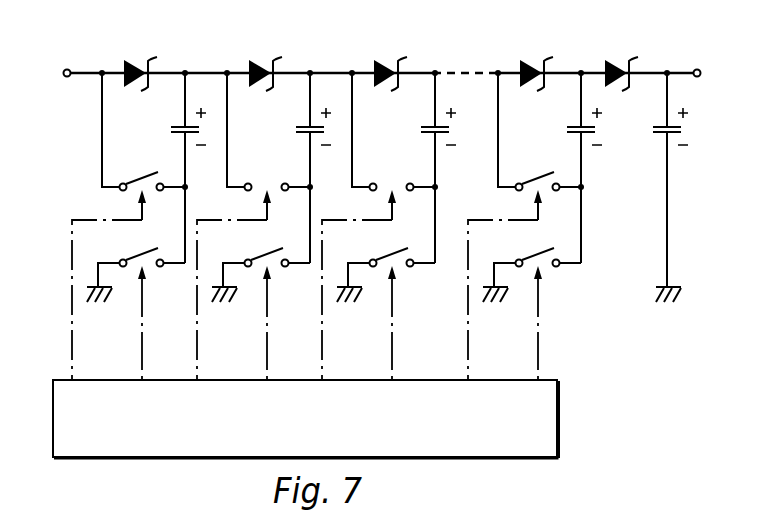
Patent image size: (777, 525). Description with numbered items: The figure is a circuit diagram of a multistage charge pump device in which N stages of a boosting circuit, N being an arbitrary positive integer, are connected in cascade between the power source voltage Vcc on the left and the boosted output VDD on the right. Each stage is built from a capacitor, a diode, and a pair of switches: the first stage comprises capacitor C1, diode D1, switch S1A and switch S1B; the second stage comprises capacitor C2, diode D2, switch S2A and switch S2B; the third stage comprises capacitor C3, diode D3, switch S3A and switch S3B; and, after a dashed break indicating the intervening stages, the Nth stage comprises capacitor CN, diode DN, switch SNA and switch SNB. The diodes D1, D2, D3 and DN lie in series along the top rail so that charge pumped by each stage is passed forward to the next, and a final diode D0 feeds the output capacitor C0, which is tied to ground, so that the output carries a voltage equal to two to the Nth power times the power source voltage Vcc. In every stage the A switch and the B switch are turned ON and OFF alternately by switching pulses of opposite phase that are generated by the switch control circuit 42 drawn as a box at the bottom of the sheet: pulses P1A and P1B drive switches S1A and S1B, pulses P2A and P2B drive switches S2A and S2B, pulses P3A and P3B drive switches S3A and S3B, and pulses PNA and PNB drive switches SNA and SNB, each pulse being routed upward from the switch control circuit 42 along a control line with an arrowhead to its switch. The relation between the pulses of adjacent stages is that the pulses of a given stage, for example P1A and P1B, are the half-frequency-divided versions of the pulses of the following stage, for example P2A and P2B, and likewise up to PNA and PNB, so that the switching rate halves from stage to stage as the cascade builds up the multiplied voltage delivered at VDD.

The switch control circuit 42 is at (539, 439).
The power source voltage Vcc is at (65, 61).
The boosted output voltage terminal VDD is at (720, 74).
The diode D1 is at (135, 59).
The second Schottky diode D2 is at (260, 59).
The third Schottky diode D3 is at (385, 59).
The Nth Schottky diode DN is at (531, 59).
The output Schottky diode D0 is at (615, 59).
The capacitor C1 is at (174, 166).
The second pump capacitor C2 is at (299, 166).
The third pump capacitor C3 is at (424, 166).
The Nth pump capacitor CN is at (570, 166).
The output smoothing capacitor C0 is at (657, 186).
The switch S1A is at (143, 130).
The switch S1B is at (136, 265).
The switch S2A is at (268, 130).
The switch S2B is at (261, 261).
The switch S3A is at (393, 130).
The switch S3B is at (386, 261).
The switch SNA is at (539, 130).
The switch SNB is at (532, 261).
The switching pulse P1A is at (109, 285).
The switching pulse P1B is at (161, 323).
The switching pulse P2A is at (234, 285).
The switching pulse P2B is at (286, 323).
The switching pulse P3A is at (359, 285).
The switching pulse P3B is at (411, 323).
The switching pulse PNA is at (505, 285).
The switching pulse PNB is at (558, 323).